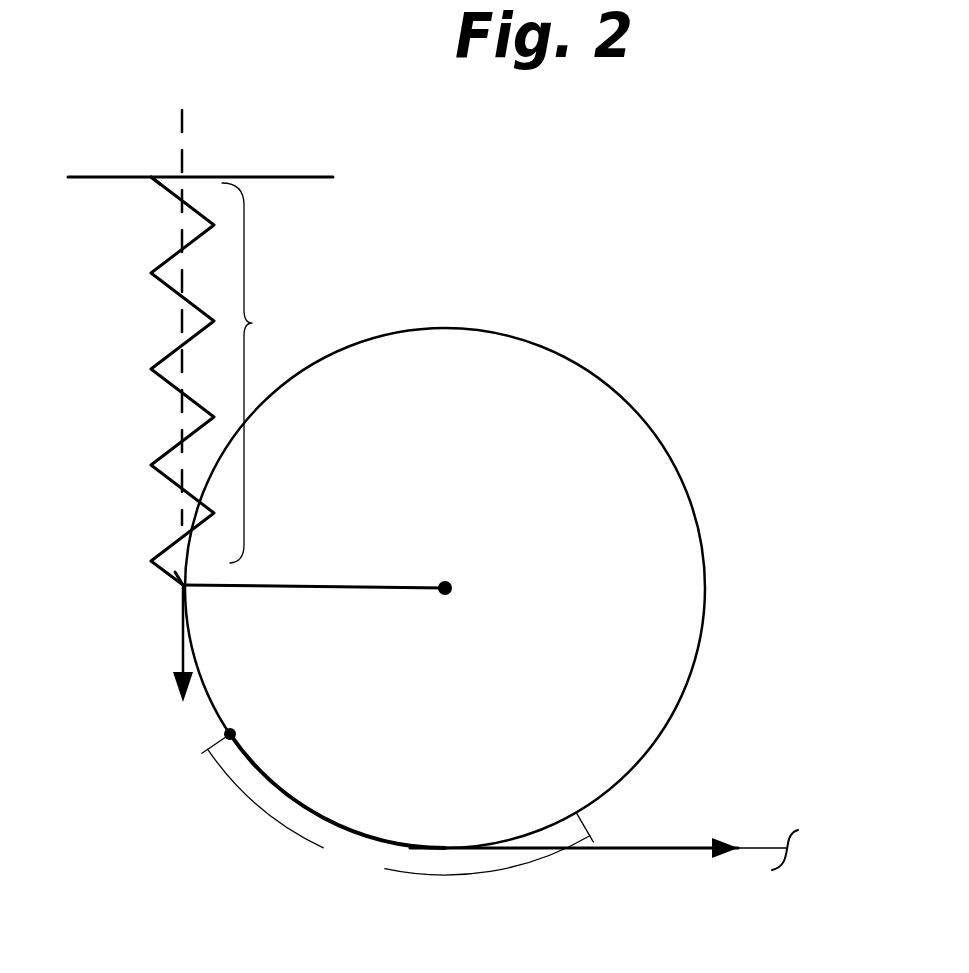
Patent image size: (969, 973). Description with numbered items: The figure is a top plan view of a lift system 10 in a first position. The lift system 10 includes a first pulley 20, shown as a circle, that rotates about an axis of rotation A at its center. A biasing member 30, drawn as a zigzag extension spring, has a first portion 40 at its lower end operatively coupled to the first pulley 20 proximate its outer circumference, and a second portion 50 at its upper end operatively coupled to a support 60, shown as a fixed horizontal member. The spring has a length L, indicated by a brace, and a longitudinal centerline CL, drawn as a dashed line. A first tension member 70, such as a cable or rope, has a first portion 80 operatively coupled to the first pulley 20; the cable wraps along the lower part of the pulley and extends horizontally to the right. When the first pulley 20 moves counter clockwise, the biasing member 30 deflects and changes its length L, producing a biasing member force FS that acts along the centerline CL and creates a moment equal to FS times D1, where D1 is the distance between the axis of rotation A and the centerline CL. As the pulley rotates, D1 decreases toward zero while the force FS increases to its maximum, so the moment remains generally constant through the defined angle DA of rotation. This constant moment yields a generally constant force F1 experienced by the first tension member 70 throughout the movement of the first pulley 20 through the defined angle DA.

The lift system 10 is at (730, 340).
The first pulley 20 is at (522, 362).
The biasing member 30 is at (151, 273).
The first portion of the biasing member 40 is at (183, 585).
The second portion of the biasing member 50 is at (153, 177).
The support 60 is at (298, 176).
The first tension member 70 is at (635, 848).
The first portion of the first tension member 80 is at (230, 734).
The longitudinal centerline of the biasing member CL is at (182, 121).
The length of the biasing member L is at (252, 373).
The axis of rotation A is at (445, 588).
The distance between the axis of rotation and the centerline D1 is at (314, 610).
The biasing member force FS is at (158, 649).
The defined angle of rotation DA is at (397, 804).
The force experienced by the first tension member F1 is at (717, 853).